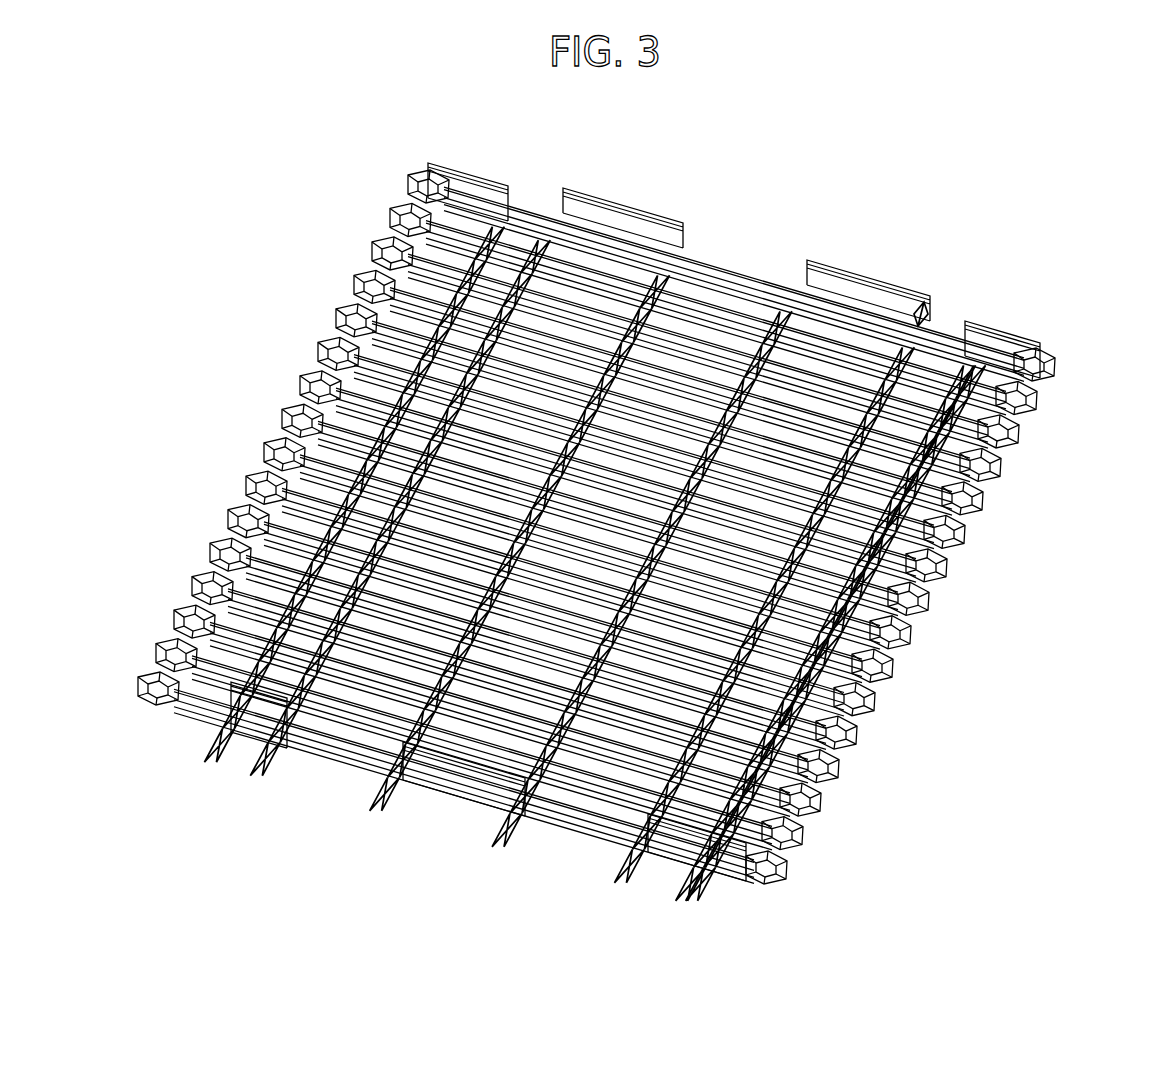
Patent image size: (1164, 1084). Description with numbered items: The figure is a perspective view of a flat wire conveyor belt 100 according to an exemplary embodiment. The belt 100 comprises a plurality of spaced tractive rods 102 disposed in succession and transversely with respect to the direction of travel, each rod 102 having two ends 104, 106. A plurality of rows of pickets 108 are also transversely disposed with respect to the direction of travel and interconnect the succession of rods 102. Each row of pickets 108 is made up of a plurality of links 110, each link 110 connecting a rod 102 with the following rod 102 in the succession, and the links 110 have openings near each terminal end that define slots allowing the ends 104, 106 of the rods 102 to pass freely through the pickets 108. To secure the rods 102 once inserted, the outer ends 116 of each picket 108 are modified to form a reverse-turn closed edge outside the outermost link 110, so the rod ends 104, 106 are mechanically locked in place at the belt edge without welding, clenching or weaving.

The conveyor belt 100 is at (833, 226).
The tractive rod 102 is at (333, 757).
The rod end 104 is at (166, 702).
The rod end 106 is at (766, 880).
The row of pickets 108 is at (930, 302).
The link 110 is at (506, 170).
The outer end of picket 116 is at (348, 266).